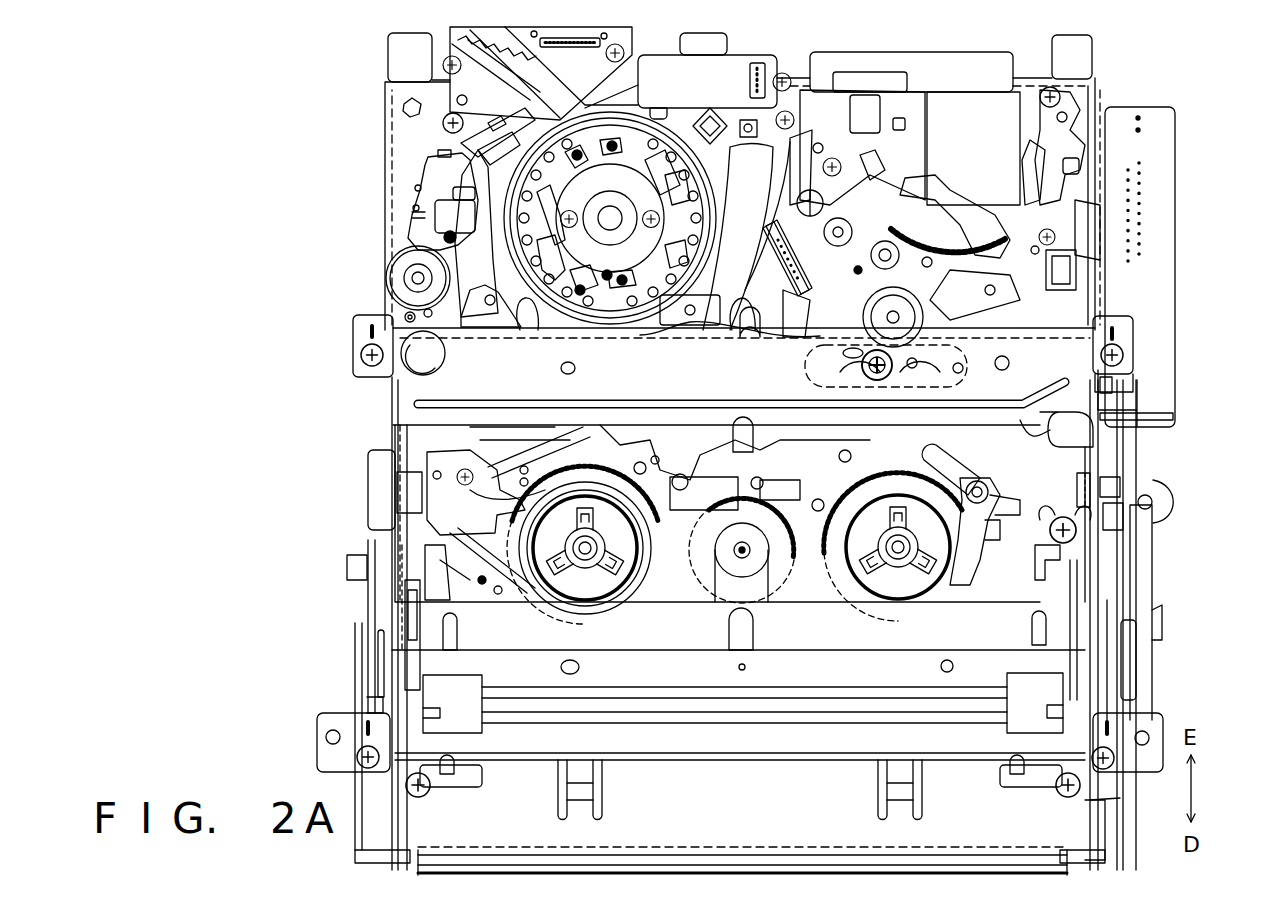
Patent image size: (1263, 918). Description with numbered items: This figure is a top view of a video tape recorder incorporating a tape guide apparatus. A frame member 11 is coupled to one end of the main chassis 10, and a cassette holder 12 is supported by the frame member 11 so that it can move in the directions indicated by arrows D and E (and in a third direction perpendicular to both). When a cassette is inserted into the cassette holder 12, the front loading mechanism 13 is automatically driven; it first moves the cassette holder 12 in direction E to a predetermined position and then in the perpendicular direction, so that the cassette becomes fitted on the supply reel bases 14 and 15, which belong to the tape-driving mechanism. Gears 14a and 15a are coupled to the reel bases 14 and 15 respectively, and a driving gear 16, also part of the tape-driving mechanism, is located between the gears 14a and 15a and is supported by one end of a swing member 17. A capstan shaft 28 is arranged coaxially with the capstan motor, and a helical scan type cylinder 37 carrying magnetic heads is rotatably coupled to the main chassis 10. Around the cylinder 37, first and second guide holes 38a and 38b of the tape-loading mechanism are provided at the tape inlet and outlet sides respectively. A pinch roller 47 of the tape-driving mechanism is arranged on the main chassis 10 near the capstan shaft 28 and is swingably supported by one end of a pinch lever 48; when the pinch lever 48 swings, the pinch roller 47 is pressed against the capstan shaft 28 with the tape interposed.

The main chassis 10 is at (1072, 460).
The frame member 11 is at (1072, 350).
The cassette holder 12 is at (437, 600).
The front loading mechanism 13 is at (1163, 562).
The supply reel base 14 is at (578, 548).
The gear 14a is at (520, 484).
The supply reel base 15 is at (857, 491).
The gear 15a is at (868, 466).
The driving gear 16 is at (733, 510).
The swing member 17 is at (752, 590).
The capstan shaft 28 is at (960, 384).
The helical scan type cylinder 37 is at (633, 135).
The first guide hole 38a is at (530, 330).
The second guide hole 38b is at (740, 330).
The pinch roller 47 is at (903, 307).
The pinch lever 48 is at (962, 280).